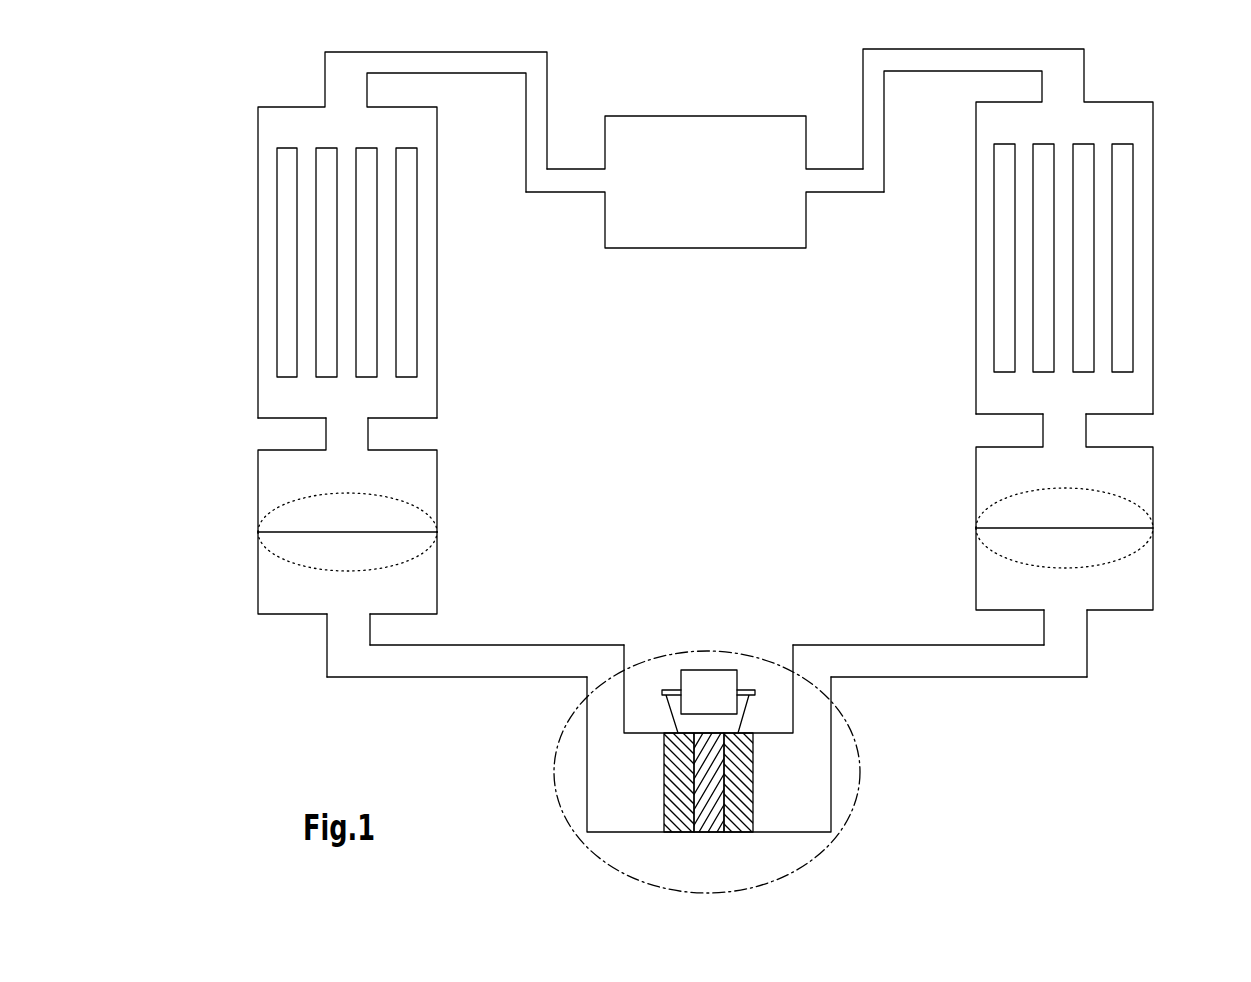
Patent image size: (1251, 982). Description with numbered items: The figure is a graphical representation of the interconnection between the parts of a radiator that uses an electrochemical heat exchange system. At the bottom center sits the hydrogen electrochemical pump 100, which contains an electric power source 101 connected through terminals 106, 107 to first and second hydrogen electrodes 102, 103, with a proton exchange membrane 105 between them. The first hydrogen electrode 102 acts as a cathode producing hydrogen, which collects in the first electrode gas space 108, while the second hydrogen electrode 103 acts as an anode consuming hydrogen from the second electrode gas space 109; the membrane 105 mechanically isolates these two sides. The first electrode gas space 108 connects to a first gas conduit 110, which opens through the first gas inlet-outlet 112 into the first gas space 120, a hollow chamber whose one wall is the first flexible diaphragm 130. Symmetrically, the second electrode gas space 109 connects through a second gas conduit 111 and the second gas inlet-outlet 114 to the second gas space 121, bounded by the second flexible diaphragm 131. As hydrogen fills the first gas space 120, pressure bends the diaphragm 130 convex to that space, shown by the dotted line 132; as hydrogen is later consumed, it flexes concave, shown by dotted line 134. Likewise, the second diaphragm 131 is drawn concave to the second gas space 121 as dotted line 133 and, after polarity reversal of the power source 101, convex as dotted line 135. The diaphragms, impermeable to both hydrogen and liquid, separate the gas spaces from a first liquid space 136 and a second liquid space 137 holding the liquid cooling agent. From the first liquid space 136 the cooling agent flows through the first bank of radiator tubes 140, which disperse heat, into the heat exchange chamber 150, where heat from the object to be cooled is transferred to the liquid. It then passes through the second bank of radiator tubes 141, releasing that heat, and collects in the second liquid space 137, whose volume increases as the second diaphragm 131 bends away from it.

The hydrogen electrochemical pump 100 is at (855, 810).
The electric power source 101 is at (709, 692).
The first hydrogen electrode 102 is at (675, 818).
The second hydrogen electrode 103 is at (744, 818).
The proton exchange membrane 105 is at (714, 820).
The terminal 106 is at (667, 690).
The terminal 107 is at (748, 690).
The first electrode gas space 108 is at (608, 775).
The second electrode gas space 109 is at (806, 765).
The first gas conduit 110 is at (505, 660).
The second gas conduit 111 is at (983, 657).
The first gas inlet-outlet 112 is at (348, 613).
The second gas inlet-outlet 114 is at (1063, 612).
The first gas space 120 is at (285, 593).
The second gas space 121 is at (1130, 593).
The first flexible diaphragm 130 is at (293, 530).
The second flexible diaphragm 131 is at (1127, 527).
The dotted line 132 is at (437, 497).
The dotted line 133 is at (985, 570).
The dotted line 134 is at (437, 570).
The dotted line 135 is at (985, 498).
The first liquid space 136 is at (280, 473).
The second liquid space 137 is at (1143, 465).
The first bank of radiator tubes 140 is at (258, 283).
The second bank of radiator tubes 141 is at (1153, 262).
The heat exchange chamber 150 is at (663, 248).